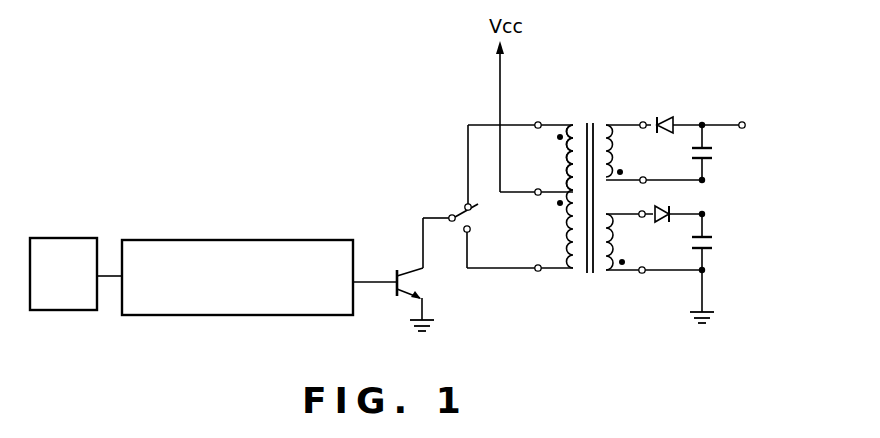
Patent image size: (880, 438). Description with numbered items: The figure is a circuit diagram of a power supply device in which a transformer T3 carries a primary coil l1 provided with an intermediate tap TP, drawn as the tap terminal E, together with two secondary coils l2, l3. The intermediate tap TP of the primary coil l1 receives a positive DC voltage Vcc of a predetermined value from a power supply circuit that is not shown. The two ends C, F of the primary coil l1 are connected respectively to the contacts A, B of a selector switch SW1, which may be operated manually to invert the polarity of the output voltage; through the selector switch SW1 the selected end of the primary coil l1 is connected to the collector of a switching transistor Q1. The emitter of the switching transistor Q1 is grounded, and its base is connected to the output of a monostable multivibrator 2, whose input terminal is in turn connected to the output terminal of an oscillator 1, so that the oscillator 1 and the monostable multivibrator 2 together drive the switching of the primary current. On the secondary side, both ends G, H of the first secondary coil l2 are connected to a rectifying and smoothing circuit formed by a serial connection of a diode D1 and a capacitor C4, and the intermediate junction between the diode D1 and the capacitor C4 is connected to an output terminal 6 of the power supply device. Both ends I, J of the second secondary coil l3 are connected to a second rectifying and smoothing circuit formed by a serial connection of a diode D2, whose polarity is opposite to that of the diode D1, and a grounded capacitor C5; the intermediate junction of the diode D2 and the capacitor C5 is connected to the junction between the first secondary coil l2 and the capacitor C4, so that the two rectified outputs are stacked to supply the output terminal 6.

The oscillator 1 is at (80, 238).
The monostable multivibrator 2 is at (322, 240).
The switching transistor Q1 is at (404, 283).
The selector switch SW1 is at (450, 214).
The contact A is at (470, 203).
The contact B is at (470, 232).
The end of primary coil C is at (536, 122).
The center tap terminal E of primary winding E is at (537, 189).
The end of primary coil F is at (537, 272).
The intermediate tap TP is at (548, 196).
The primary coil l1 is at (574, 127).
The transformer T3 is at (590, 122).
The first secondary coil l2 is at (607, 125).
The second secondary coil l3 is at (606, 271).
The end of first secondary coil G is at (644, 122).
The end of first secondary coil H is at (646, 178).
The end of second secondary coil I is at (644, 217).
The end of second secondary coil J is at (645, 273).
The diode D1 is at (666, 119).
The diode D2 is at (658, 206).
The capacitor C4 is at (713, 155).
The grounded capacitor C5 is at (714, 246).
The output terminal 6 is at (741, 122).